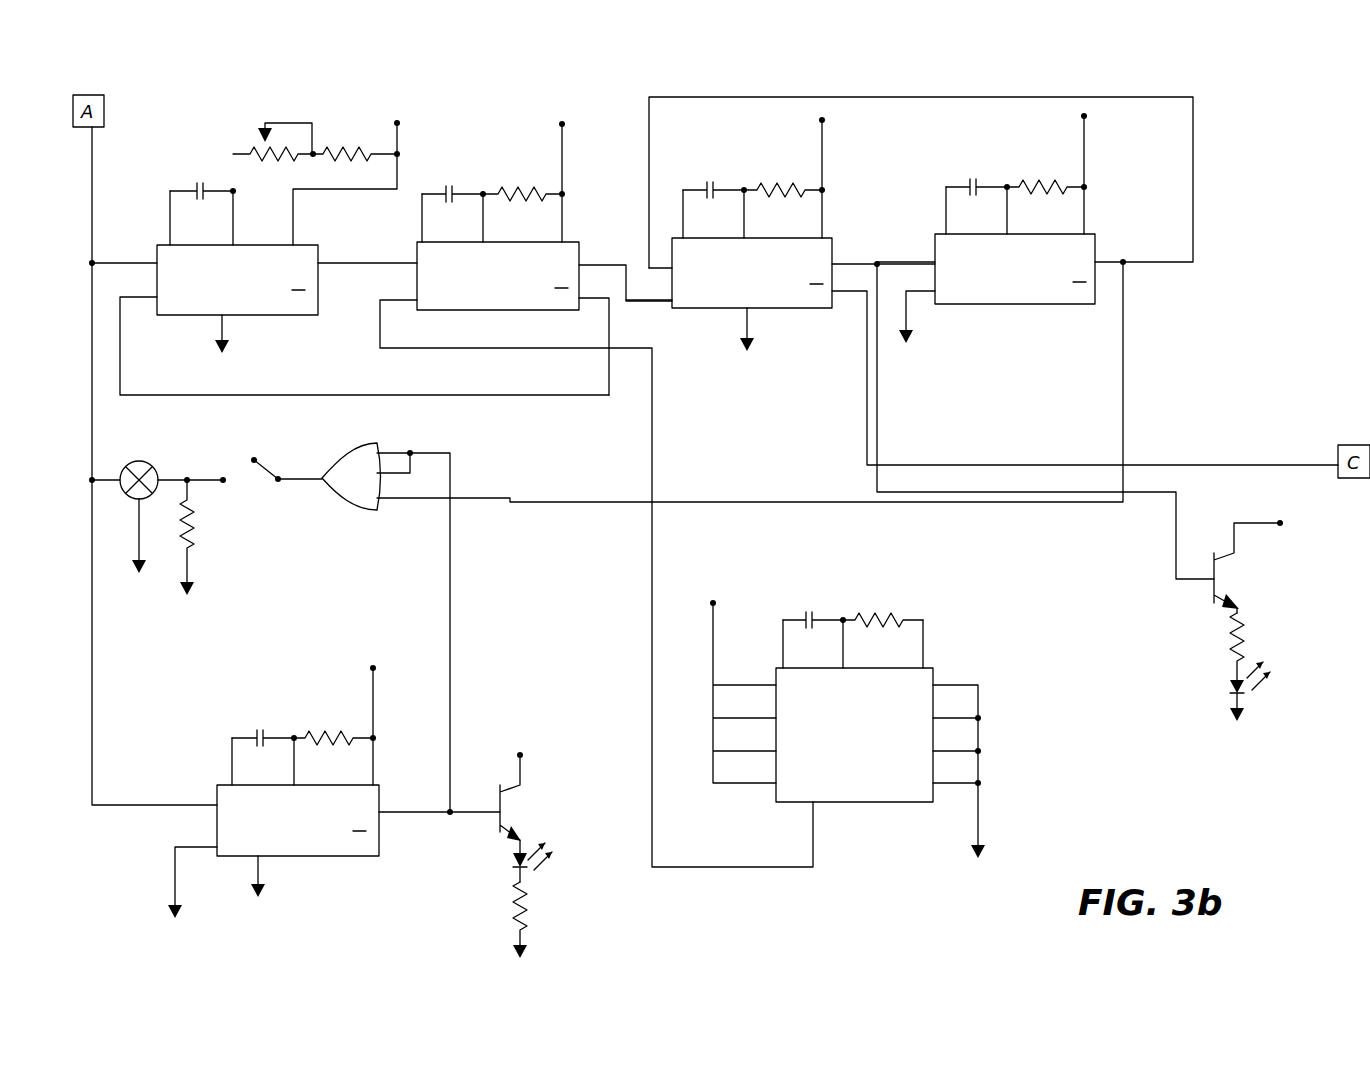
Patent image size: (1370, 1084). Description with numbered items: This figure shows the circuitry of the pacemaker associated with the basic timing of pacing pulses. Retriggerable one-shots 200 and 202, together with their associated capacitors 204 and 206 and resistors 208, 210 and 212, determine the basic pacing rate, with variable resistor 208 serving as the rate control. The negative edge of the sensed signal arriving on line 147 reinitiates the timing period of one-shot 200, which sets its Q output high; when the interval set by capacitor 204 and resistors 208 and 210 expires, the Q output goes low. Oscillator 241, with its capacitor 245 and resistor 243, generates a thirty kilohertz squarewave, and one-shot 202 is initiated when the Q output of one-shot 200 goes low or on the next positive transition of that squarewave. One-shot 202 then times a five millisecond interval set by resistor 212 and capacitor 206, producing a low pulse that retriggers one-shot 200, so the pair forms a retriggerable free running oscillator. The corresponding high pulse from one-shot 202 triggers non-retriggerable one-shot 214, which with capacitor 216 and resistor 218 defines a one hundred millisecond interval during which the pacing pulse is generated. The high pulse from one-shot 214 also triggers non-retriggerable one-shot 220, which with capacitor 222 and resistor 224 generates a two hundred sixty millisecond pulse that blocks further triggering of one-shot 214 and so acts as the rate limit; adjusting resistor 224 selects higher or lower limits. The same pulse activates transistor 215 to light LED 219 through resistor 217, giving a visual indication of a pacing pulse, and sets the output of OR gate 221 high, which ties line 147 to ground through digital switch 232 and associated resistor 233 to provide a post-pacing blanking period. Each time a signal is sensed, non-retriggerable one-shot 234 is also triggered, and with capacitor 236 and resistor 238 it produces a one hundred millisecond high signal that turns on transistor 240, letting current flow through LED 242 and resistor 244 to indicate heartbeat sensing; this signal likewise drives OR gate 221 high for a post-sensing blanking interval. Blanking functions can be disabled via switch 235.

The line 147 is at (92, 166).
The retriggerable one-shot 200 is at (250, 318).
The retriggerable one-shot 202 is at (462, 312).
The capacitor 204 is at (197, 190).
The capacitor 206 is at (445, 192).
The variable resistor 208 is at (253, 135).
The resistor 210 is at (340, 138).
The resistor 212 is at (518, 188).
The non-retriggerable one-shot 214 is at (775, 312).
The transistor 215 is at (1206, 598).
The capacitor 216 is at (705, 186).
The resistor 217 is at (1228, 650).
The resistor 218 is at (790, 185).
The LED 219 is at (1226, 692).
The non-retriggerable one-shot 220 is at (997, 306).
The OR gate 221 is at (355, 512).
The capacitor 222 is at (965, 184).
The resistor 224 is at (1042, 182).
The digital switch 232 is at (148, 463).
The resistor 233 is at (197, 541).
The non-retriggerable one-shot 234 is at (337, 852).
The switch 235 is at (270, 462).
The capacitor 236 is at (250, 735).
The resistor 238 is at (322, 730).
The transistor 240 is at (510, 825).
The oscillator 241 is at (935, 678).
The LED 242 is at (528, 867).
The resistor 243 is at (895, 618).
The resistor 244 is at (535, 918).
The capacitor 245 is at (805, 616).